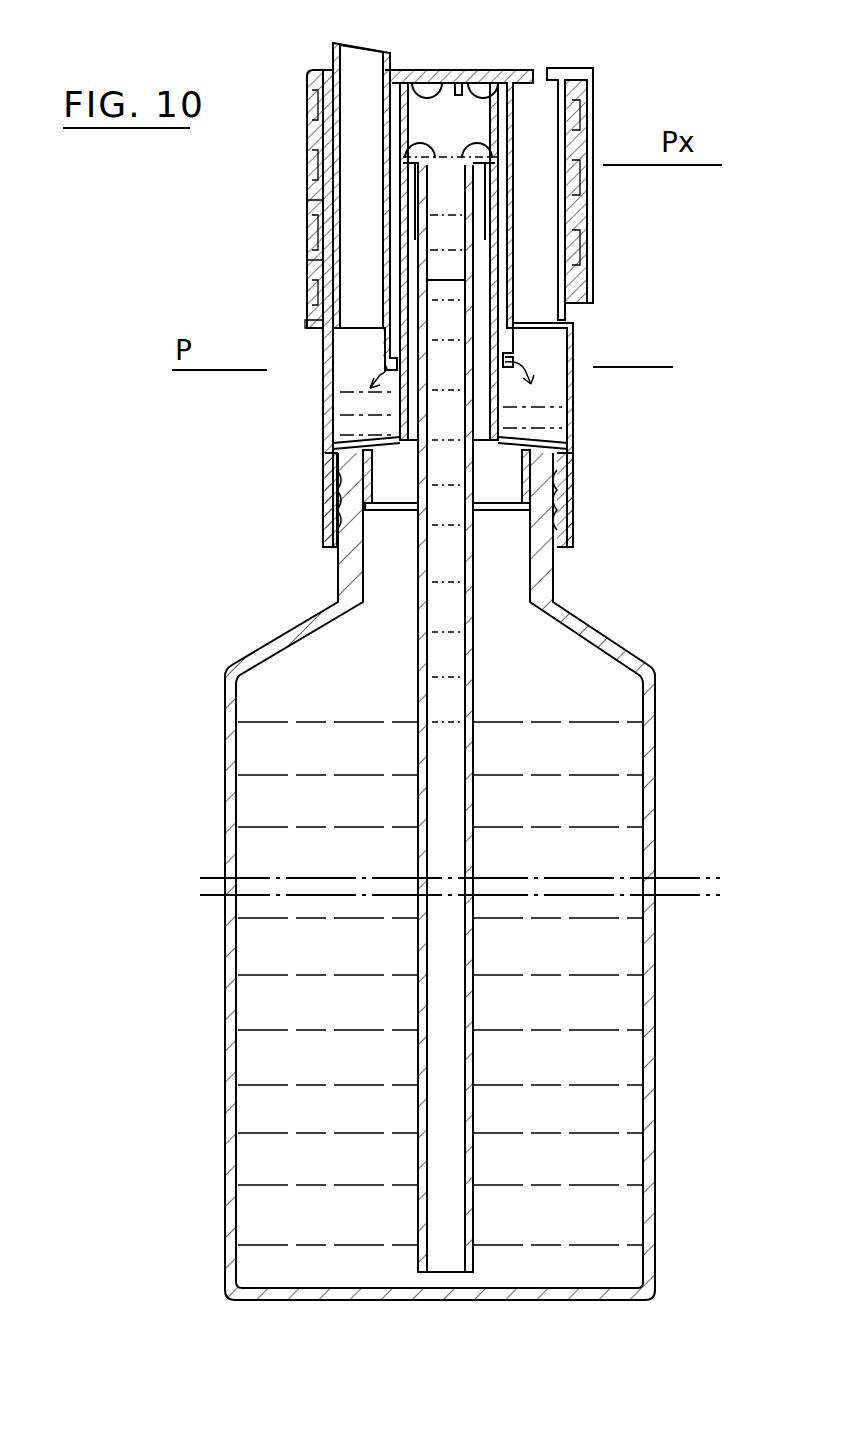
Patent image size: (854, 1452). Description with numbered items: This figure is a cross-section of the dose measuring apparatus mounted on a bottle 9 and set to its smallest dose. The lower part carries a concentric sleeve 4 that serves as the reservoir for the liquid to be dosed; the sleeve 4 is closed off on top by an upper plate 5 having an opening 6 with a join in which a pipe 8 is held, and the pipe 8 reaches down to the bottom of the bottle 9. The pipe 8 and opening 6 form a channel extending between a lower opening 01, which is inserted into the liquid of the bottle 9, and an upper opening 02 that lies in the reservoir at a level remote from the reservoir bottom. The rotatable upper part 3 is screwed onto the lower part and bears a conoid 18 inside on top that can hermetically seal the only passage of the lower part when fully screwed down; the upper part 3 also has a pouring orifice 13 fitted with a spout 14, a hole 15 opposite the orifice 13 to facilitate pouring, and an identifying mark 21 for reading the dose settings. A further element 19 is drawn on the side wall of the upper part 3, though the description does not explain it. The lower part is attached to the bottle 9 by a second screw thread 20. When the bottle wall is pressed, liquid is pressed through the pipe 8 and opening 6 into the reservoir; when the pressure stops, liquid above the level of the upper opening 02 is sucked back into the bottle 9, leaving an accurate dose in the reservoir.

The rotatable upper part 3 is at (632, 110).
The concentric sleeve 4 is at (400, 300).
The upper plate 5 is at (497, 67).
The opening 6 is at (450, 232).
The pipe 8 is at (480, 303).
The bottle 9 is at (652, 958).
The pouring orifice 13 is at (363, 67).
The spout 14 is at (330, 50).
The hole 15 is at (540, 73).
The conoid 18 is at (427, 103).
The cap seal 19 is at (310, 240).
The second screw thread 20 is at (558, 548).
The identifying mark 21 is at (307, 323).
The lower opening 01 is at (450, 1265).
The upper opening 02 is at (387, 368).